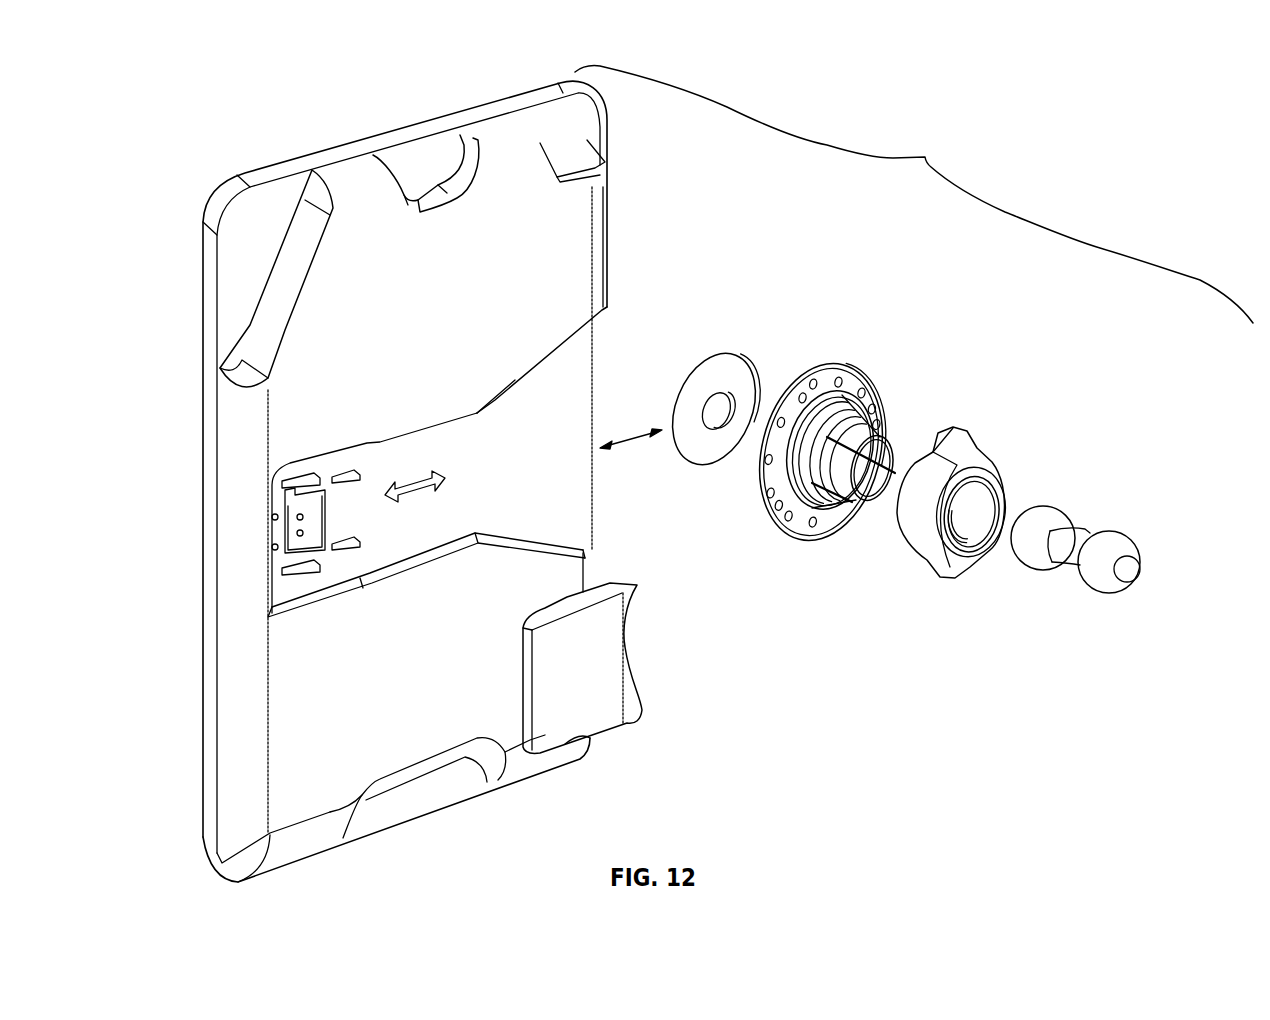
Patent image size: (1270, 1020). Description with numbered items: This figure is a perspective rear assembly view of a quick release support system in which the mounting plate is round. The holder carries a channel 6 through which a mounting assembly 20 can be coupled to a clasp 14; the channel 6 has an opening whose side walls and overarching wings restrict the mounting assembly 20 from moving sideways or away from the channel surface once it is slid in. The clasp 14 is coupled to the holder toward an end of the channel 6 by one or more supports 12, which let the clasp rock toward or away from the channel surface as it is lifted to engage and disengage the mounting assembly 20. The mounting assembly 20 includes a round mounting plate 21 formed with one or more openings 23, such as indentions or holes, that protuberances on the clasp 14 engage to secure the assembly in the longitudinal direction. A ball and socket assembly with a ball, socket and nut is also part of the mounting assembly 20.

The channel 6 is at (573, 372).
The supports 12 is at (295, 560).
The clasp 14 is at (610, 645).
The mounting assembly 20 is at (848, 628).
The mounting plate 21 is at (805, 540).
The openings 23 is at (772, 517).